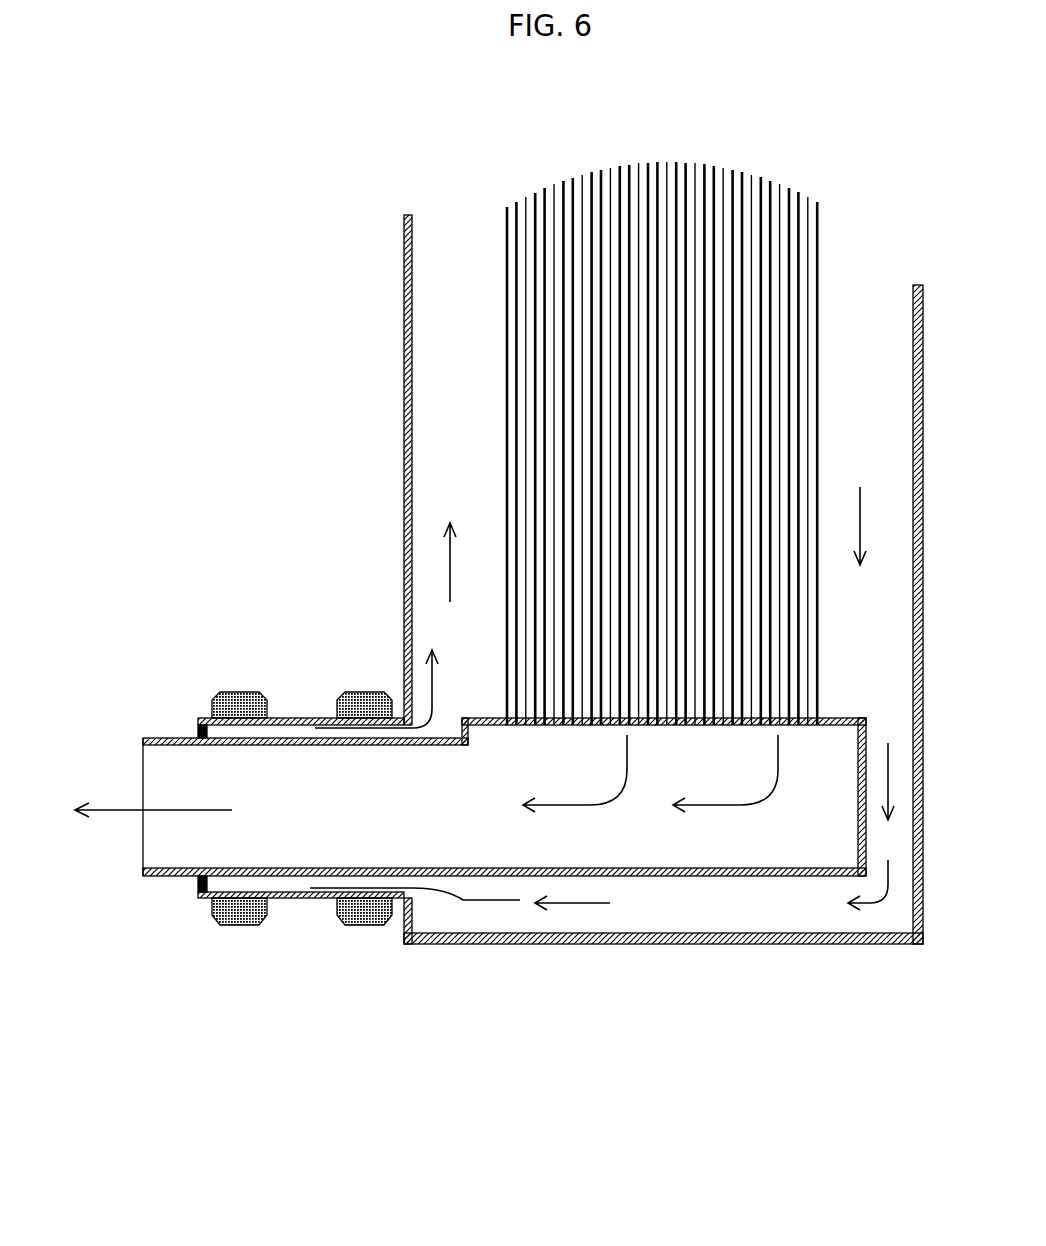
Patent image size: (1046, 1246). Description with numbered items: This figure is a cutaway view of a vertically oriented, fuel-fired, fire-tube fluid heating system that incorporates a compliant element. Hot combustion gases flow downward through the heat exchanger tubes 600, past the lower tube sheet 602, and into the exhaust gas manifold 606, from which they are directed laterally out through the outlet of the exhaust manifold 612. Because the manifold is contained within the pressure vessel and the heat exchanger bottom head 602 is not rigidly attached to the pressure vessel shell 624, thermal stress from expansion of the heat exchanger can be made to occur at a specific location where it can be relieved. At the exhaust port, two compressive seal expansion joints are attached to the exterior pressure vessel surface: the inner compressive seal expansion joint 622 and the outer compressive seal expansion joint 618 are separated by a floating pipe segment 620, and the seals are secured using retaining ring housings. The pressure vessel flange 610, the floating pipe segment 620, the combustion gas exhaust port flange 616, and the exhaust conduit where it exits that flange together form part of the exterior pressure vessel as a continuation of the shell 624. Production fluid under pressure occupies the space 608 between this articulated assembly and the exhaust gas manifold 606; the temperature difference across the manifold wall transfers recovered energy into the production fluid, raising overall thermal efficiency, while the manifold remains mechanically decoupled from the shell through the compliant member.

The heat exchanger tubes 600 is at (507, 212).
The lower tube sheet 602 is at (827, 716).
The exhaust gas manifold 606 is at (752, 846).
The space 608 is at (652, 906).
The pressure vessel flange 610 is at (254, 892).
The outlet of the exhaust manifold 612 is at (147, 893).
The combustion gas exhaust port flange 616 is at (197, 718).
The outer compressive seal expansion joint 618 is at (236, 692).
The floating pipe segment 620 is at (318, 717).
The inner compressive seal expansion joint 622 is at (364, 692).
The pressure vessel shell 624 is at (402, 306).